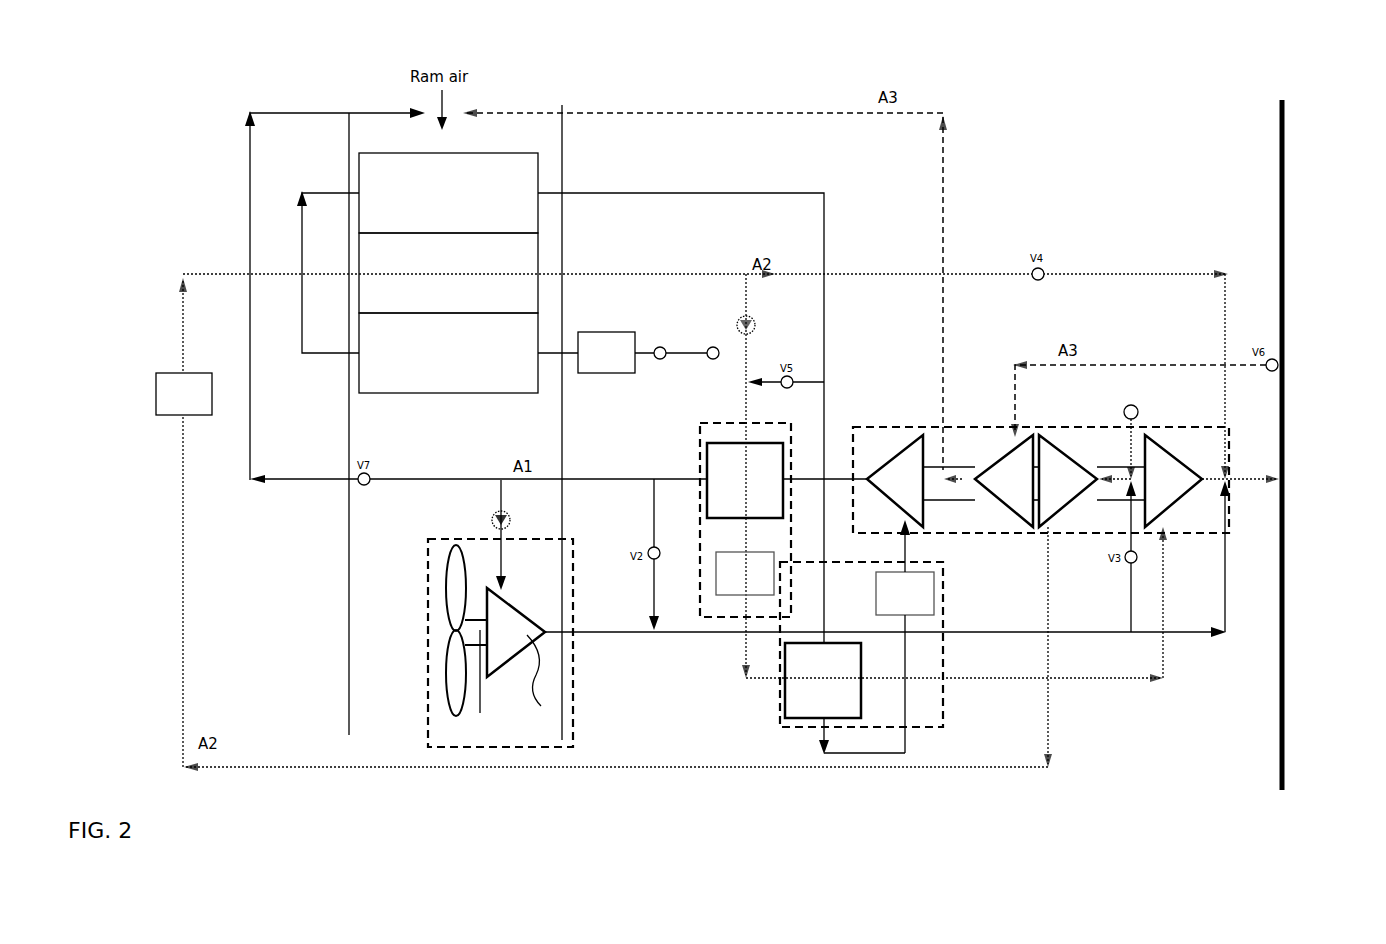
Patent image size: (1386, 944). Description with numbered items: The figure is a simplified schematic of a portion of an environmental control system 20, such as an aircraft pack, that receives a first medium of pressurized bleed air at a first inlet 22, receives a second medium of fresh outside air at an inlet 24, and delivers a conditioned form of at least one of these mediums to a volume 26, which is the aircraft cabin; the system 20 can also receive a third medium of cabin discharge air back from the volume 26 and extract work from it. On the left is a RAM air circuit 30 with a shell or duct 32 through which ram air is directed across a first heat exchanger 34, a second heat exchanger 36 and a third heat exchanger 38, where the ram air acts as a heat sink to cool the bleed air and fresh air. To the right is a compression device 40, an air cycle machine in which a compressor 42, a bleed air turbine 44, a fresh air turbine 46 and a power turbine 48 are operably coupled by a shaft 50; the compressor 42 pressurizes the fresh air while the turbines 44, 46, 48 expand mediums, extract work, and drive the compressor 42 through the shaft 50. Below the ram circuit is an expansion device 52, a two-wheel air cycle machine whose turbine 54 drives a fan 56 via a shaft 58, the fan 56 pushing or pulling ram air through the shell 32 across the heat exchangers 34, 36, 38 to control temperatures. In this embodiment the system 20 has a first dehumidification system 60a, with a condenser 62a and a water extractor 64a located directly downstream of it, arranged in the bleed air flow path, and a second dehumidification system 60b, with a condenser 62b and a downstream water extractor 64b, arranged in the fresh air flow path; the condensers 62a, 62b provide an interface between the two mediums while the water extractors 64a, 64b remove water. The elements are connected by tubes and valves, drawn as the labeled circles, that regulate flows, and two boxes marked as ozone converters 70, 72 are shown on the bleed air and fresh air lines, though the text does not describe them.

The environmental control system 20 is at (130, 148).
The first inlet 22 is at (713, 347).
The inlet 24 is at (1138, 410).
The volume 26 is at (1294, 428).
The RAM air circuit 30 is at (352, 115).
The shell or duct 32 is at (562, 137).
The first heat exchanger 34 is at (468, 353).
The second heat exchanger 36 is at (448, 273).
The third heat exchanger 38 is at (560, 398).
The compression device 40 is at (1236, 519).
The compressor 42 is at (1063, 500).
The bleed air turbine 44 is at (912, 465).
The fresh air turbine 46 is at (1173, 493).
The power turbine 48 is at (1015, 495).
The shaft 50 is at (963, 495).
The expansion device 52 is at (424, 682).
The turbine 54 is at (541, 686).
The fan 56 is at (455, 587).
The shaft 58 is at (478, 679).
The first dehumidification system 60a is at (947, 688).
The second dehumidification system 60b is at (697, 431).
The condenser 62a is at (797, 698).
The condenser 62b is at (721, 463).
The water extractor 64a is at (918, 605).
The water extractor 64b is at (729, 596).
The ozone converter 70 is at (621, 345).
The second ozone converter 72 is at (157, 385).